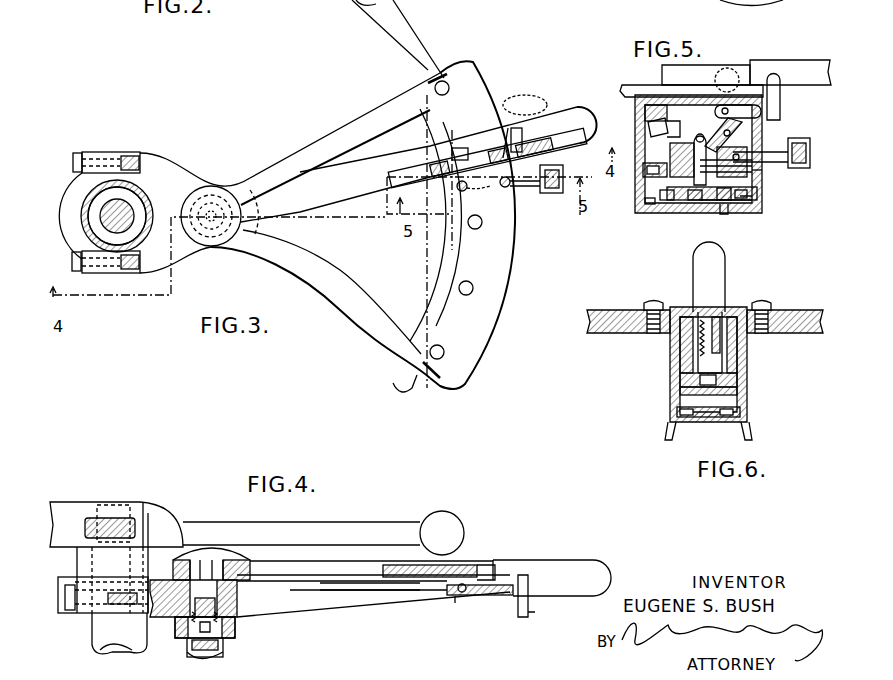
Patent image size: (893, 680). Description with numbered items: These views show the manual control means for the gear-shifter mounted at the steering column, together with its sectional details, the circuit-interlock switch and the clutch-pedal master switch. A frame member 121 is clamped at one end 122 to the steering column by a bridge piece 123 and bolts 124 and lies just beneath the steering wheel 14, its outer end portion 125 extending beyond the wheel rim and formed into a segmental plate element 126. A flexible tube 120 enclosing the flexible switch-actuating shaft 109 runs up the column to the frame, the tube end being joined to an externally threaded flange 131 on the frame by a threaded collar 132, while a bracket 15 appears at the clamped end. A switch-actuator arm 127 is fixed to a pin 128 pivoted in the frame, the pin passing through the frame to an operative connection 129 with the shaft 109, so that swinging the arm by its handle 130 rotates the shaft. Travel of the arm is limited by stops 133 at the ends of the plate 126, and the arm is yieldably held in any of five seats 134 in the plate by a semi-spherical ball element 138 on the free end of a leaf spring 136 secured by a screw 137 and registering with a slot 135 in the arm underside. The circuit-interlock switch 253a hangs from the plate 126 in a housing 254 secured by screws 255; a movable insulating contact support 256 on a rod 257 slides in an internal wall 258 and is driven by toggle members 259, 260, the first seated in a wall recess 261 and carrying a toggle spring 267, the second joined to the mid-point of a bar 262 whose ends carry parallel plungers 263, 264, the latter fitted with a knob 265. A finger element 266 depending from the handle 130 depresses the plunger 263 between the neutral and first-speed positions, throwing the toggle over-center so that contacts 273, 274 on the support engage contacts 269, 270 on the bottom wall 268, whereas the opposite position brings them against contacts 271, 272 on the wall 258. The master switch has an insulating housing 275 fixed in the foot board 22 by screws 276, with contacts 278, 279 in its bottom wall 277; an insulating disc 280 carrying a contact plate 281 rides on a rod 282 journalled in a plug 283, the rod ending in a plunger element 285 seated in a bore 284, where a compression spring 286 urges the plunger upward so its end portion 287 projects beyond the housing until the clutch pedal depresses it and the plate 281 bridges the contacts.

In FIG. 4, the steering wheel 14 is at (438, 522).
In FIG. 4, the bracket 15 is at (92, 648).
In FIG. 6, the foot board 22 is at (605, 318).
In FIG. 4, the flexible switch-actuating shaft 109 is at (228, 650).
In FIG. 4, the flexible tube 120 is at (192, 652).
In FIG. 3, the frame member 121 is at (325, 236).
In FIG. 4, the frame member 121 is at (330, 599).
In FIG. 3, the end of frame member 122 is at (142, 186).
In FIG. 4, the end of frame member 122 is at (95, 565).
In FIG. 3, the bridge piece 123 is at (125, 157).
In FIG. 4, the bridge piece 123 is at (90, 606).
In FIG. 3, the bolts 124 is at (72, 168).
In FIG. 4, the bolts 124 is at (70, 606).
In FIG. 3, the outer end portion of frame 125 is at (392, 373).
In FIG. 4, the outer end portion of frame 125 is at (436, 605).
In FIG. 3, the segmental plate element 126 is at (488, 332).
In FIG. 5, the segmental plate element 126 is at (660, 98).
In FIG. 4, the segmental plate element 126 is at (500, 597).
In FIG. 3, the switch-actuator arm 127 is at (328, 189).
In FIG. 5, the switch-actuator arm 127 is at (713, 68).
In FIG. 4, the switch-actuator arm 127 is at (343, 567).
In FIG. 3, the pin 128 is at (208, 247).
In FIG. 4, the pin 128 is at (208, 558).
In FIG. 4, the operative connection 129 is at (235, 630).
In FIG. 3, the handle 130 is at (563, 114).
In FIG. 5, the handle 130 is at (808, 68).
In FIG. 4, the handle 130 is at (590, 566).
In FIG. 4, the externally threaded flange 131 is at (178, 628).
In FIG. 4, the threaded collar 132 is at (258, 643).
In FIG. 3, the stops 133 is at (438, 78).
In FIG. 3, the semi-spherical depressions or seats 134 is at (444, 352).
In FIG. 4, the semi-spherical depressions or seats 134 is at (465, 600).
In FIG. 4, the slot 135 is at (480, 580).
In FIG. 3, the leaf spring 136 is at (462, 147).
In FIG. 4, the leaf spring 136 is at (460, 568).
In FIG. 4, the screw 137 is at (420, 592).
In FIG. 4, the semi-spherical ball element 138 is at (455, 605).
In FIG. 3, the circuit-interlock switch 253a is at (425, 240).
In FIG. 5, the circuit-interlock switch 253a is at (628, 98).
In FIG. 5, the housing 254 is at (762, 197).
In FIG. 3, the screws 255 is at (484, 195).
In FIG. 5, the screws 255 is at (740, 75).
In FIG. 5, the movable switch contact support 256 is at (698, 205).
In FIG. 5, the rod 257 is at (752, 182).
In FIG. 5, the internal transverse wall portion 258 is at (648, 128).
In FIG. 5, the toggle member 259 is at (707, 127).
In FIG. 5, the toggle member 260 is at (745, 128).
In FIG. 5, the housing wall recess 261 is at (650, 117).
In FIG. 5, the bar 262 is at (760, 114).
In FIG. 3, the plunger element 263 is at (520, 195).
In FIG. 5, the plunger element 263 is at (730, 110).
In FIG. 3, the plunger 264 is at (560, 225).
In FIG. 5, the plunger 264 is at (798, 146).
In FIG. 3, the knob 265 is at (560, 195).
In FIG. 5, the knob 265 is at (810, 155).
In FIG. 3, the finger element 266 is at (514, 127).
In FIG. 5, the finger element 266 is at (782, 110).
In FIG. 4, the finger element 266 is at (530, 614).
In FIG. 5, the toggle spring 267 is at (694, 136).
In FIG. 5, the lower or bottom wall 268 is at (735, 210).
In FIG. 5, the contact 269 is at (667, 205).
In FIG. 5, the contact 270 is at (750, 208).
In FIG. 5, the contact 271 is at (643, 172).
In FIG. 5, the contact 272 is at (763, 172).
In FIG. 5, the contact 273 is at (644, 202).
In FIG. 5, the contact 274 is at (762, 207).
In FIG. 6, the housing 275 is at (672, 370).
In FIG. 6, the screws 276 is at (655, 305).
In FIG. 6, the bottom wall 277 is at (700, 422).
In FIG. 6, the contact 278 is at (680, 412).
In FIG. 6, the contact 279 is at (747, 412).
In FIG. 6, the insulating disc 280 is at (737, 379).
In FIG. 6, the contact plate 281 is at (737, 392).
In FIG. 6, the rod 282 is at (722, 340).
In FIG. 6, the stationary member or plug 283 is at (737, 357).
In FIG. 6, the axial chamber or bore 284 is at (680, 380).
In FIG. 6, the plunger element 285 is at (722, 300).
In FIG. 6, the compression spring 286 is at (700, 335).
In FIG. 6, the end portion of plunger 287 is at (716, 260).